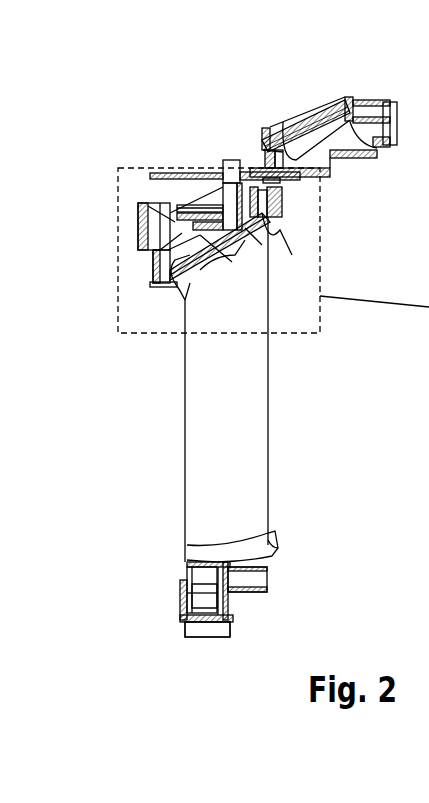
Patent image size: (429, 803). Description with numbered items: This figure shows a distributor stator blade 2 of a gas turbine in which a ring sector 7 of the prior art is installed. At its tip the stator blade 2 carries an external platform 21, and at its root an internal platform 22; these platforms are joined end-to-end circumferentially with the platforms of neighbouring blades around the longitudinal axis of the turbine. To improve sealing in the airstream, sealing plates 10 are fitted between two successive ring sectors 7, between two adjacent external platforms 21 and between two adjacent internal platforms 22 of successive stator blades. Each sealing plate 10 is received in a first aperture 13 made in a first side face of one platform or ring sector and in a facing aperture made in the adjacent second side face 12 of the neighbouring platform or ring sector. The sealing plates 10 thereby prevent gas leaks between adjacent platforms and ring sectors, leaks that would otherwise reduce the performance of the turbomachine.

The stator blade 2 is at (185, 374).
The external platform 21 is at (152, 283).
The internal platform 22 is at (180, 625).
The ring sector 7 is at (303, 118).
The sealing plate 10 is at (205, 245).
The second side face 12 is at (283, 220).
The first aperture 13 is at (376, 150).